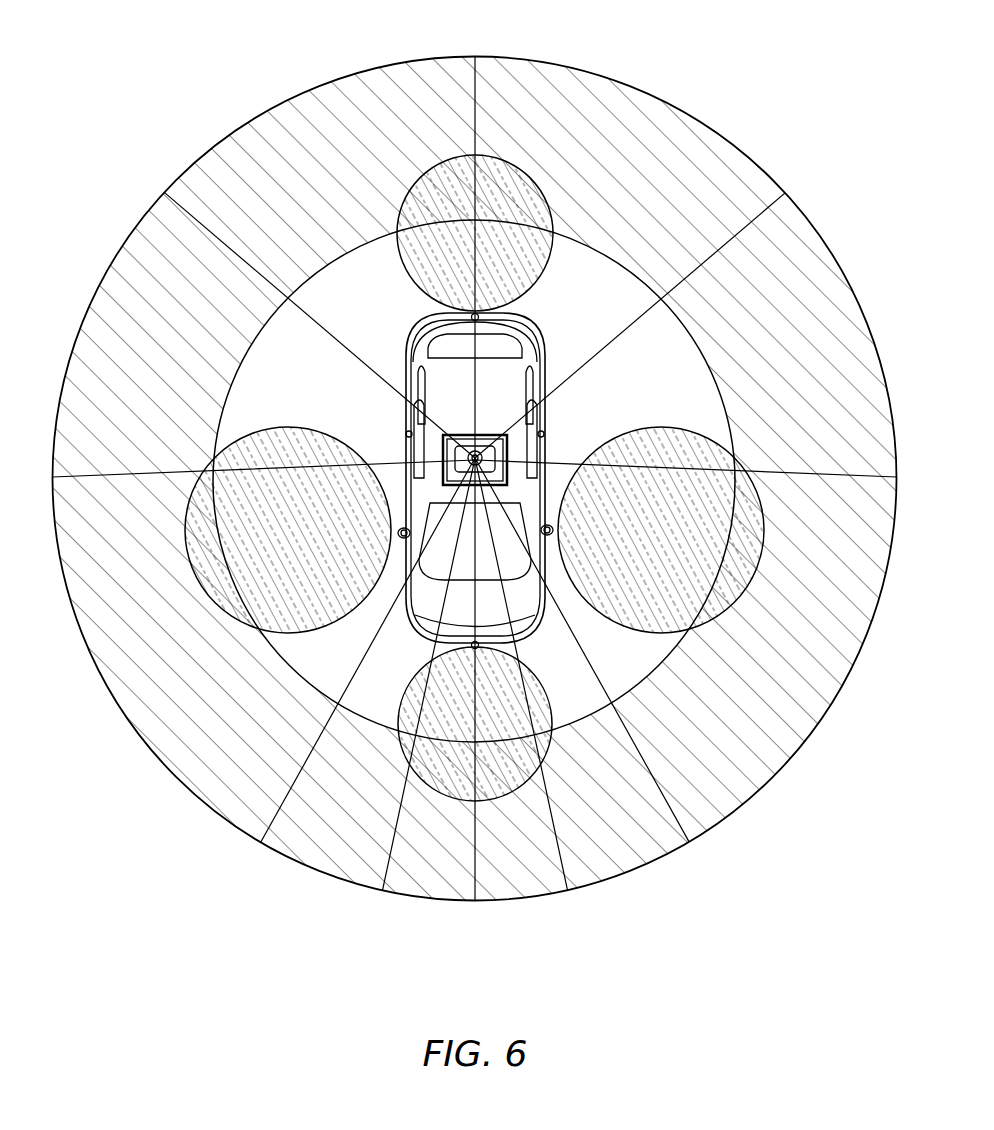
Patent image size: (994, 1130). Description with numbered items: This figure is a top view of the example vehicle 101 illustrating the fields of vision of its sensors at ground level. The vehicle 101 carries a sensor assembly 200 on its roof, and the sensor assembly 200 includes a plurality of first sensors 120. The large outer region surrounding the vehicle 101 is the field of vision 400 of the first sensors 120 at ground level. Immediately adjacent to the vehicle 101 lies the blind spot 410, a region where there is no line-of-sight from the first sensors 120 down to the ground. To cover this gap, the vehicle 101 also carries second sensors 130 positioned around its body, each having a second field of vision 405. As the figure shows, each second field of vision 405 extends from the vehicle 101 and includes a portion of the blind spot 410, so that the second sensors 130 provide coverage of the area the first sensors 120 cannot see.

The vehicle 101 is at (409, 342).
The first sensor 120 is at (543, 434).
The second sensor 130 is at (484, 319).
The sensor assembly 200 is at (444, 456).
The field of vision 400 is at (631, 160).
The second field of vision 405 is at (509, 176).
The blind spot 410 is at (669, 371).